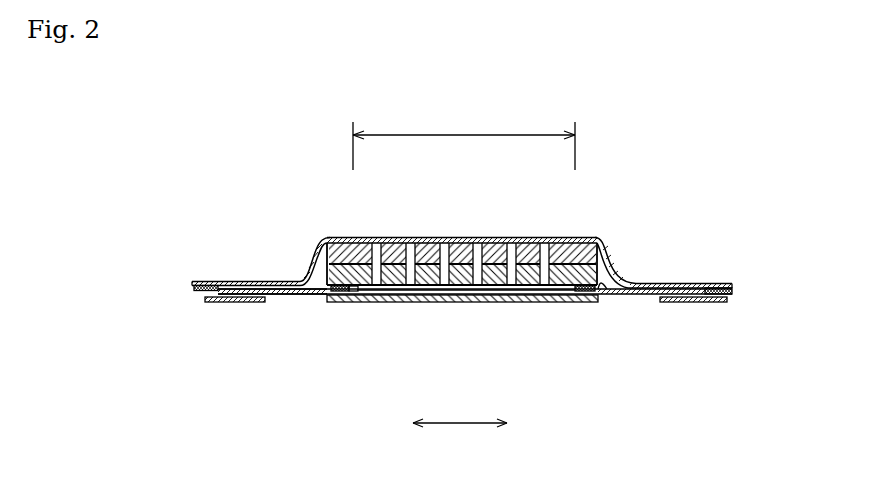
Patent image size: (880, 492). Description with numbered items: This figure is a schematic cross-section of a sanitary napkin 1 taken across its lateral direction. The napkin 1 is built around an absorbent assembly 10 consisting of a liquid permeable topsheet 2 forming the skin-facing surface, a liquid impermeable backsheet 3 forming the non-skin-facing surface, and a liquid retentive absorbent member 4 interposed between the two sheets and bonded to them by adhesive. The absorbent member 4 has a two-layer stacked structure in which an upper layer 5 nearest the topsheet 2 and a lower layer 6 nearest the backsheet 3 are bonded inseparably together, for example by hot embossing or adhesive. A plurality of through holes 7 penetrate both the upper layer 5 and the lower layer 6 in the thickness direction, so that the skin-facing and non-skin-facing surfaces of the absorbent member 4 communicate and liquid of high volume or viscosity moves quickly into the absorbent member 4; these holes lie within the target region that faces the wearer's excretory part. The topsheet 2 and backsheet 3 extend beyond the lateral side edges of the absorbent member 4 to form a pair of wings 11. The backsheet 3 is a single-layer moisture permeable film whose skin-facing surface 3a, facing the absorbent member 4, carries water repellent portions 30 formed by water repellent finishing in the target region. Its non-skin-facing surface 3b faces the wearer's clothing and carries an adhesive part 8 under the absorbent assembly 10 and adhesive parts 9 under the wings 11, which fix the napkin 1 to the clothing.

The napkin 1 is at (697, 193).
The topsheet 2 is at (604, 251).
The backsheet 3 is at (625, 290).
The skin-facing surface 3a is at (599, 292).
The non-skin-facing surface 3b is at (297, 302).
The absorbent member 4 is at (327, 352).
The upper layer 5 is at (338, 292).
The lower layer 6 is at (358, 292).
The through holes 7 is at (377, 238).
The adhesive part 8 is at (507, 292).
The adhesive parts 9 is at (220, 303).
The absorbent assembly 10 is at (578, 237).
The wings 11 is at (223, 282).
The water repellent portions 30 is at (427, 287).